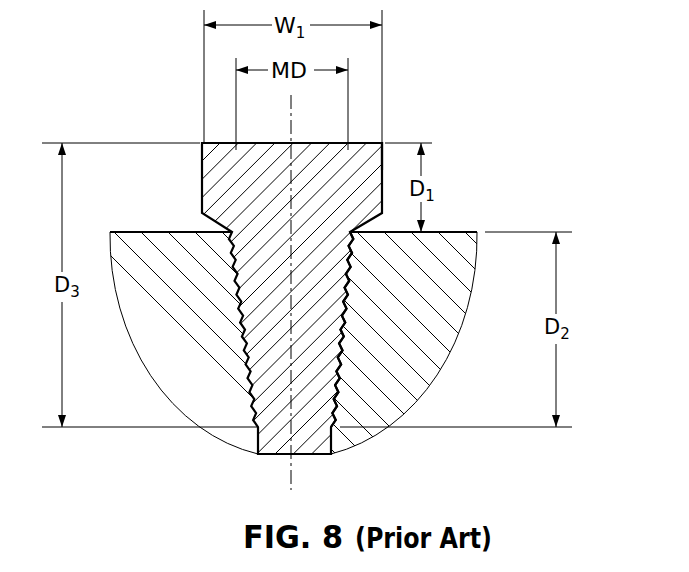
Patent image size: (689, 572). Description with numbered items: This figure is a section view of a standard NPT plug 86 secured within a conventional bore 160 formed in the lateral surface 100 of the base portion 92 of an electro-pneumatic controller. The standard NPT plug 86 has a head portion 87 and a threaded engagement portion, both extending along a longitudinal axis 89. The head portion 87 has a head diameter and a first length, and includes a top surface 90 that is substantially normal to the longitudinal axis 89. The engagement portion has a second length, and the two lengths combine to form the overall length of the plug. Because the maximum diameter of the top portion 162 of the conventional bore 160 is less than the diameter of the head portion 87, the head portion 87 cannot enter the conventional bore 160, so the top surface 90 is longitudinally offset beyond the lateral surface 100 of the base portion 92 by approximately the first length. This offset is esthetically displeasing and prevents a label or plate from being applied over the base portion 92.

The standard NPT plug 86 is at (202, 172).
The head portion 87 is at (332, 143).
The longitudinal axis 89 is at (291, 103).
The top surface 90 is at (372, 143).
The base portion 92 is at (163, 365).
The lateral surface 100 is at (160, 232).
The conventional bore 160 is at (340, 349).
The top portion of the conventional bore 162 is at (368, 246).